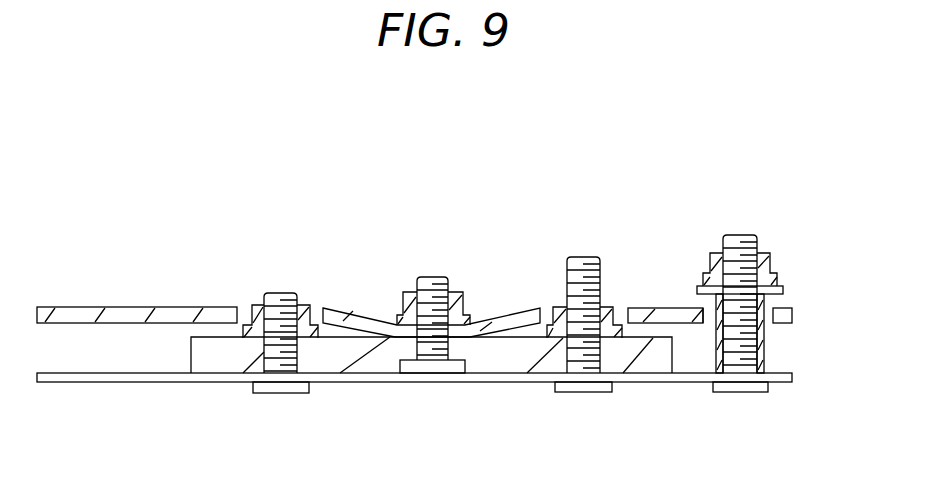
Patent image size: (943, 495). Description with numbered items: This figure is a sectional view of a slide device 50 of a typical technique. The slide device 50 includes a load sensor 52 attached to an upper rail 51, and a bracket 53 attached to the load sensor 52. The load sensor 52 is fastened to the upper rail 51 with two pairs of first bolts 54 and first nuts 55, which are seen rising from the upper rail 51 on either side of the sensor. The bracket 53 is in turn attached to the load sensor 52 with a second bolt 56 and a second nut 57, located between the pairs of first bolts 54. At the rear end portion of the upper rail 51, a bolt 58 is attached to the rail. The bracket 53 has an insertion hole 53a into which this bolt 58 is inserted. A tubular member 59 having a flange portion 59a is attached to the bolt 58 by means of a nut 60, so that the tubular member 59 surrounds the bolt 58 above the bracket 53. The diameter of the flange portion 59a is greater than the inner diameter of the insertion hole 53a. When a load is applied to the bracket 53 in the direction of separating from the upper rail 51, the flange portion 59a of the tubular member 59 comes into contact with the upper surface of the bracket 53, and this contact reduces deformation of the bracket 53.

The slide device 50 is at (713, 180).
The upper rail 51 is at (62, 383).
The load sensor 52 is at (192, 358).
The bracket 53 is at (125, 306).
The insertion hole 53a is at (703, 326).
The first bolt 54 is at (282, 394).
The first nut 55 is at (255, 305).
The second bolt 56 is at (438, 383).
The second nut 57 is at (405, 292).
The bolt 58 is at (738, 393).
The tubular member 59 is at (765, 352).
The flange portion 59a is at (795, 287).
The nut 60 is at (778, 250).